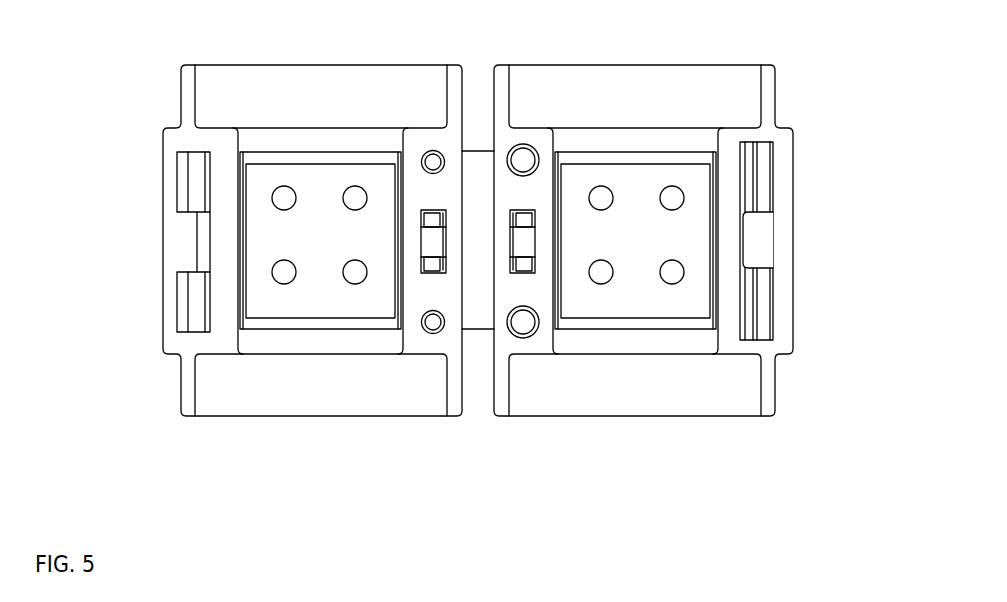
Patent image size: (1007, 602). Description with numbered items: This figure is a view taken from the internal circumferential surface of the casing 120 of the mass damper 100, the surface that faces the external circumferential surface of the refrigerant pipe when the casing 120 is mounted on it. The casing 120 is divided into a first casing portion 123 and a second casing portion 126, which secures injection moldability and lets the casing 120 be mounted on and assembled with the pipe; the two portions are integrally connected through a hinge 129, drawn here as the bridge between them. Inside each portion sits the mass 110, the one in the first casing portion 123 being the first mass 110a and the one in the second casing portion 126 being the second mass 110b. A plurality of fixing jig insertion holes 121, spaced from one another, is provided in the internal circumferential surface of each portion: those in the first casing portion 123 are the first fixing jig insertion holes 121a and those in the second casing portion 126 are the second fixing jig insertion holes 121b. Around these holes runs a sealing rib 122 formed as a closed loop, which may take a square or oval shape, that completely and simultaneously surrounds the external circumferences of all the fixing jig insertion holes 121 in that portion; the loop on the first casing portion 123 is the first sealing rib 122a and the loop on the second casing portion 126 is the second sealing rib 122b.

The mass damper 100 is at (157, 106).
The mass 110 is at (480, 288).
The first mass 110a is at (280, 272).
The second mass 110b is at (675, 272).
The casing 120 is at (552, 466).
The fixing jig insertion holes 121 is at (475, 169).
The first fixing jig insertion holes 121a is at (285, 197).
The second fixing jig insertion holes 121b is at (601, 196).
The sealing rib 122 is at (457, 304).
The first sealing rib 122a is at (268, 325).
The second sealing rib 122b is at (661, 322).
The first casing portion 123 is at (425, 400).
The second casing portion 126 is at (533, 400).
The hinge 129 is at (478, 160).